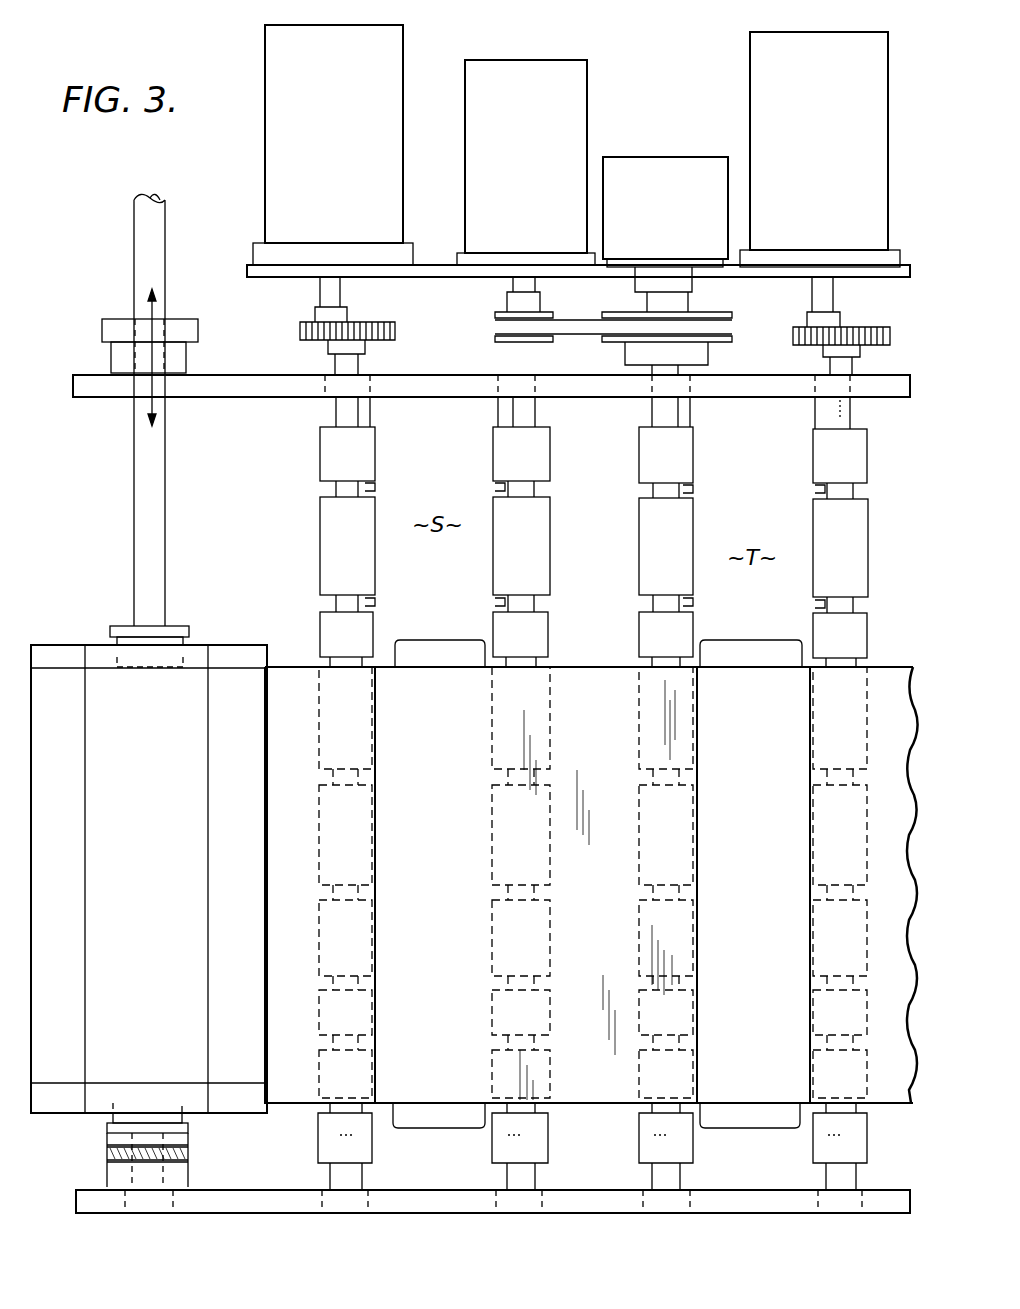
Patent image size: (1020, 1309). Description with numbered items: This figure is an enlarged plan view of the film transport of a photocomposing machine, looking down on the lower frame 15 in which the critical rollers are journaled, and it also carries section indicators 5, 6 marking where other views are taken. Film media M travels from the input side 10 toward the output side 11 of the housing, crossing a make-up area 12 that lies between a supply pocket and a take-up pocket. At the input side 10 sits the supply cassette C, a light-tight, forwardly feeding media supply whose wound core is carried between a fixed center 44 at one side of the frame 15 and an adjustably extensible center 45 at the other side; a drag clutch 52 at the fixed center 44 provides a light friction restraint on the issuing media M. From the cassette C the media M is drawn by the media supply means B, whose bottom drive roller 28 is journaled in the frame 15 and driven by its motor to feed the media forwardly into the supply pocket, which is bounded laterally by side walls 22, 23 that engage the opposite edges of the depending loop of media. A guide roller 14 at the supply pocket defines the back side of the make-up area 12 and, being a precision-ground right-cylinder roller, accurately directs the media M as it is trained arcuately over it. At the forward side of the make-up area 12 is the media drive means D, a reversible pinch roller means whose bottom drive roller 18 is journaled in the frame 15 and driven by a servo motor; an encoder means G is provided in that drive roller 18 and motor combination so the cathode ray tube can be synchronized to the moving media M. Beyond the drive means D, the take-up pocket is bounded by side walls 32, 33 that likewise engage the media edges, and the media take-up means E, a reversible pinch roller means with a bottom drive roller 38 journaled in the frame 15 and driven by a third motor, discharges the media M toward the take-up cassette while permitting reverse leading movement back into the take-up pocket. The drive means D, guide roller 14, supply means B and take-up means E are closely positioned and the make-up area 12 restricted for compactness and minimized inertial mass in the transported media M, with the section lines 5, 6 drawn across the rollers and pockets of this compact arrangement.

The input side 10 is at (82, 628).
The output side 11 is at (906, 614).
The make-up area 12 is at (840, 234).
The guide roller 14 is at (532, 527).
The lower frame 15 is at (265, 392).
The bottom drive roller 18 is at (672, 530).
The side wall 22 is at (428, 1118).
The side wall 23 is at (453, 653).
The bottom drive roller 28 is at (322, 527).
The side wall 32 is at (748, 1118).
The side wall 33 is at (763, 653).
The bottom drive roller 38 is at (856, 530).
The fixed center 44 is at (106, 1127).
The adjustably extensible center 45 is at (186, 640).
The drag clutch 52 is at (106, 1149).
The section line 5- 5 is at (290, 1105).
The section line 6- 6 is at (297, 830).
The media supply means B is at (408, 50).
The media drive means D is at (590, 76).
The media take-up means E is at (748, 66).
The encoder means G is at (677, 157).
The supply cassette C is at (149, 879).
The film media M is at (598, 1076).